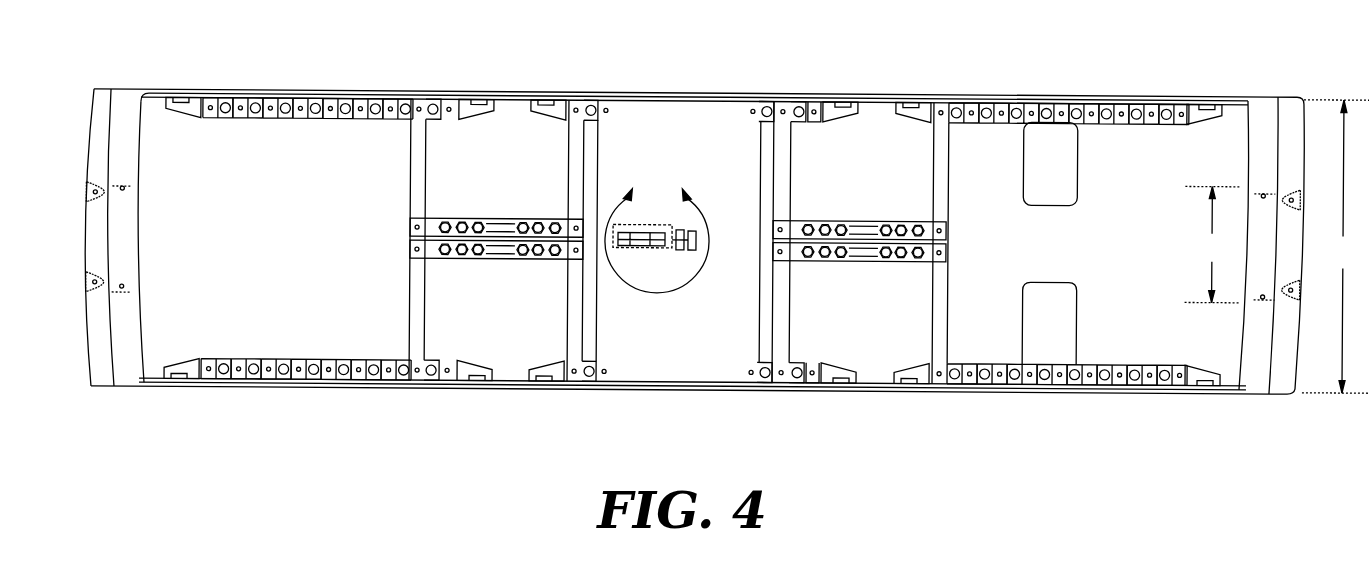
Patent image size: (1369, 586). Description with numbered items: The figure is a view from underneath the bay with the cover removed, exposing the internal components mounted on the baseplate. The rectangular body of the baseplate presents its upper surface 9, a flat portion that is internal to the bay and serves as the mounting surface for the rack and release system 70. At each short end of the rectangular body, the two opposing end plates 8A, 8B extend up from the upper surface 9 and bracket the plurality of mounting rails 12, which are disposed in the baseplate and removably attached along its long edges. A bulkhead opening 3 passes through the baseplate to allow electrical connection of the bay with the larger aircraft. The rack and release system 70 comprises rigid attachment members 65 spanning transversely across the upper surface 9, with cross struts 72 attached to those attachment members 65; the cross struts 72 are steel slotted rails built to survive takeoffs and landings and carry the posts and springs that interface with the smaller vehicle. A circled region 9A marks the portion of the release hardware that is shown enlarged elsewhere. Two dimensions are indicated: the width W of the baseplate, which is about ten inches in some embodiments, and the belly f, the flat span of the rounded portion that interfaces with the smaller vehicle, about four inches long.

The opposing end plate 8B is at (86, 122).
The opposing end plate 8A is at (1302, 120).
The rack and release system 70 is at (679, 208).
The attachment member 65 is at (935, 191).
The detail view indicator 9A is at (657, 233).
The bulkhead opening 3 is at (1066, 153).
The upper surface 9 is at (1131, 251).
The cross strut 72 is at (677, 276).
The mounting rail 12 is at (1190, 382).
The width W is at (1335, 246).
The belly f is at (1213, 244).